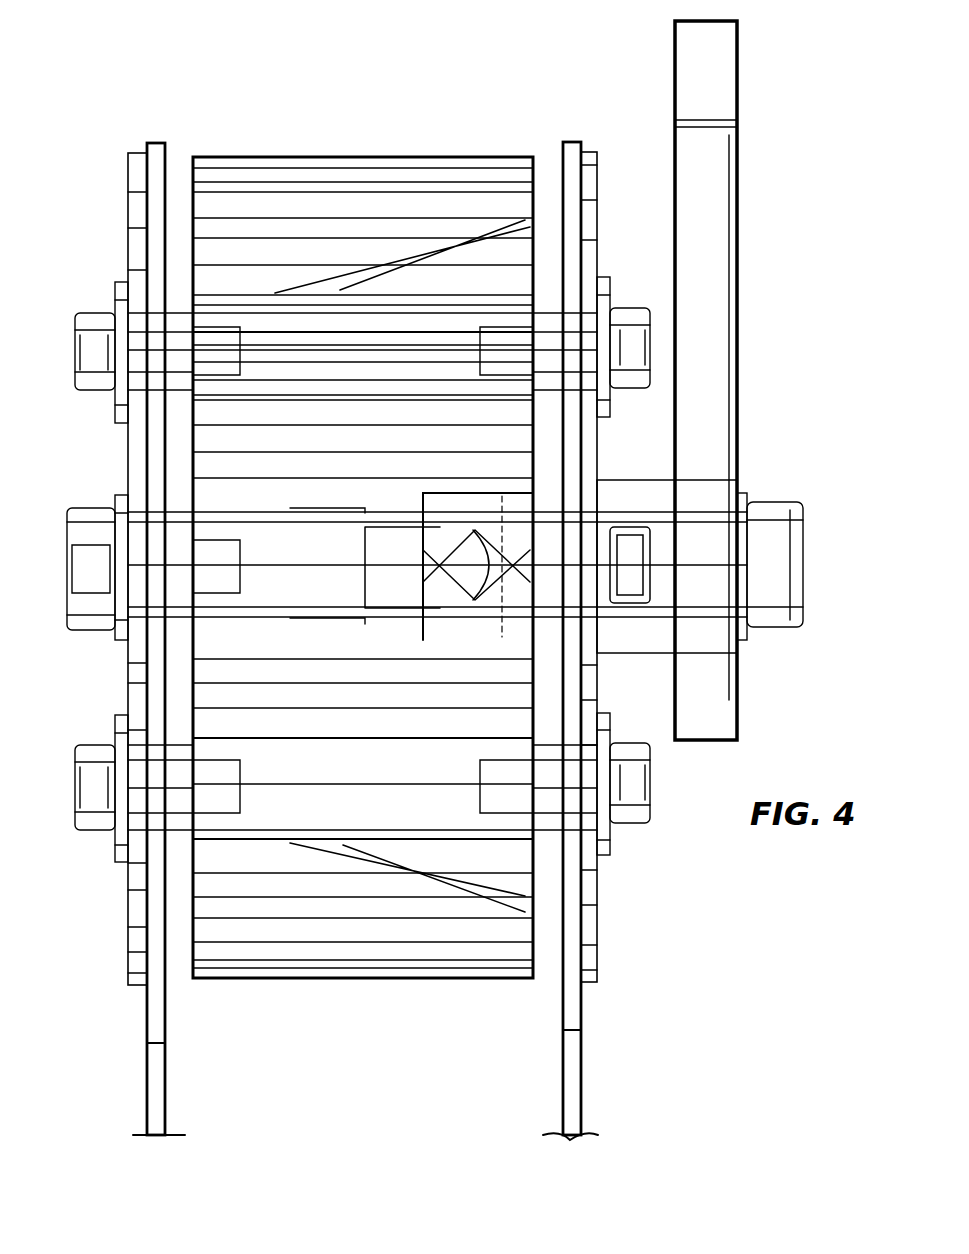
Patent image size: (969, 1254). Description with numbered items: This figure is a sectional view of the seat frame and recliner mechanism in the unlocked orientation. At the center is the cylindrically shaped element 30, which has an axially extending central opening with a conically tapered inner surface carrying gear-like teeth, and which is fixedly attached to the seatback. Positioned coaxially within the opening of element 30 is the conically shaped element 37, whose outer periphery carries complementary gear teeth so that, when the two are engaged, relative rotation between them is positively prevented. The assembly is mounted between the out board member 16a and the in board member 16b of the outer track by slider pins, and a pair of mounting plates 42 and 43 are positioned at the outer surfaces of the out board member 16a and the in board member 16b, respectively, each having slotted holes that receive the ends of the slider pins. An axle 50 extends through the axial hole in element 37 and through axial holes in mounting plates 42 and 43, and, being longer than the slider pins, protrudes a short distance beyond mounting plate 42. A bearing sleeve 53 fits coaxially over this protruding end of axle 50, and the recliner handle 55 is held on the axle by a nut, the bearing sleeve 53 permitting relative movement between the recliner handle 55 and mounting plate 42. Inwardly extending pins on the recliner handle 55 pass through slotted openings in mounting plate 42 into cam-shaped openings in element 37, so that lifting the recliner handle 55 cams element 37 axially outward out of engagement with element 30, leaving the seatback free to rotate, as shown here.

The cylindrically shaped element 30 is at (424, 175).
The conically shaped element 37 is at (523, 257).
The axle 50 is at (783, 553).
The bearing sleeve 53 is at (630, 492).
The recliner handle 55 is at (718, 368).
The mounting plate 43 is at (140, 940).
The mounting plate 42 is at (593, 958).
The out board member 16a is at (578, 1022).
The in board member 16b is at (155, 1023).